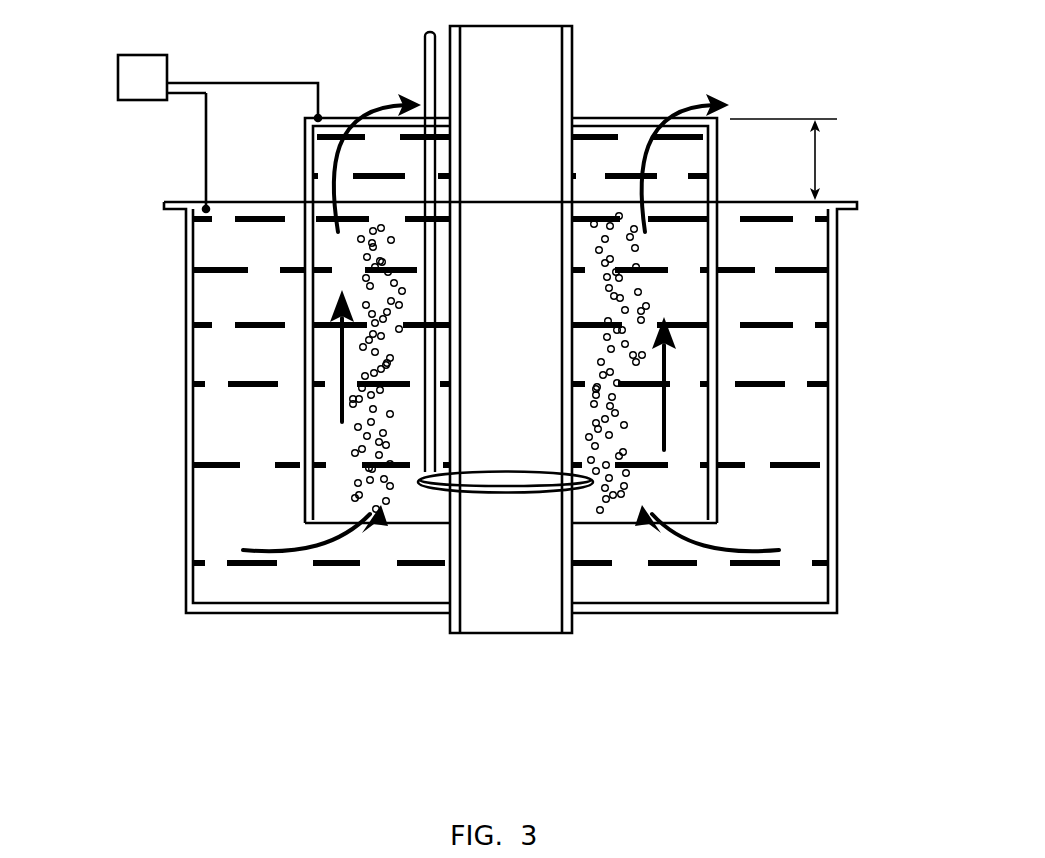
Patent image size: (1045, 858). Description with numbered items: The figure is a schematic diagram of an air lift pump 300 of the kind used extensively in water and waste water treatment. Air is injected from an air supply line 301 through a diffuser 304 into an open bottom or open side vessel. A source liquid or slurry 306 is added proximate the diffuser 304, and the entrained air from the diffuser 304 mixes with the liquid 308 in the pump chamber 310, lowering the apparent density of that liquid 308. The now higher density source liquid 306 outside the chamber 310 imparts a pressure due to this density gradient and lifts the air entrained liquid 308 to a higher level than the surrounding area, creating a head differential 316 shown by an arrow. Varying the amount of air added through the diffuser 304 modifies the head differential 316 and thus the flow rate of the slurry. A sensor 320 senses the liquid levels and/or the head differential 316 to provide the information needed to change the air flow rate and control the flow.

The air lift pump 300 is at (489, 369).
The air supply line 301 is at (428, 57).
The diffuser 304 is at (418, 479).
The source liquid or slurry 306 is at (762, 382).
The air entrained liquid 308 is at (648, 305).
The pump chamber 310 is at (303, 305).
The head differential 316 is at (818, 158).
The sensor 320 is at (142, 68).